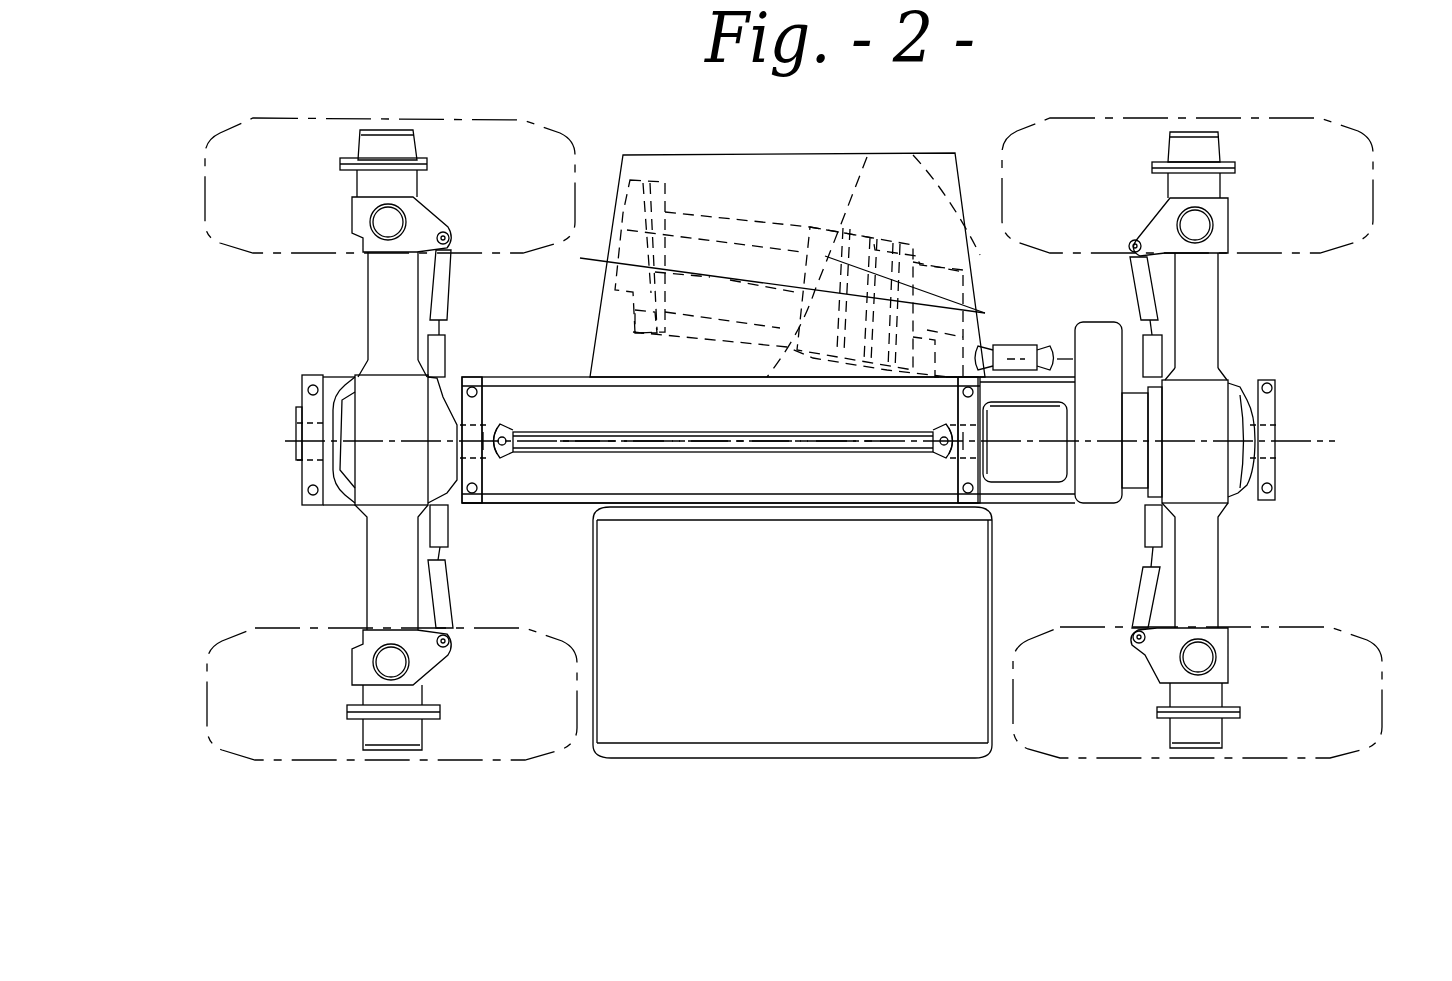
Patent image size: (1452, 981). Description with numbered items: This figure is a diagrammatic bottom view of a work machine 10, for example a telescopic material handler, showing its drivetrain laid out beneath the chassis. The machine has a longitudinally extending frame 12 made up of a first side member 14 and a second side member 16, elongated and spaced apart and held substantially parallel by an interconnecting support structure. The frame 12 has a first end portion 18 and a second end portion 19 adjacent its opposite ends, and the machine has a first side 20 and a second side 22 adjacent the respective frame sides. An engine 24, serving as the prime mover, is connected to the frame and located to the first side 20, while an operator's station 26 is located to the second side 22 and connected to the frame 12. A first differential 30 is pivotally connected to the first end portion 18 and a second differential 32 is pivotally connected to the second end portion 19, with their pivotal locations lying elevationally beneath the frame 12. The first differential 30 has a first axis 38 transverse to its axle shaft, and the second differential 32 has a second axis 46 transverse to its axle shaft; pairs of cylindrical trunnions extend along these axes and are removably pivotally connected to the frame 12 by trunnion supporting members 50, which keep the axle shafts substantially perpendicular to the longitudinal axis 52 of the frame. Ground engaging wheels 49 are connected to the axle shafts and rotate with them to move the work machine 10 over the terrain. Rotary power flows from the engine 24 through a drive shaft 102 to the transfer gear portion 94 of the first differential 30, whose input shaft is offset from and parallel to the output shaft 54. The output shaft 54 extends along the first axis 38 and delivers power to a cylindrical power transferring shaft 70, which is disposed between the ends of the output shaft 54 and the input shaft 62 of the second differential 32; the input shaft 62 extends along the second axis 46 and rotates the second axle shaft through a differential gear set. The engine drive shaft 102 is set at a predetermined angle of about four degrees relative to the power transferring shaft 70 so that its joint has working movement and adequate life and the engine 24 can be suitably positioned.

The work machine 10 is at (1306, 94).
The ground engaging wheels 49 is at (203, 190).
The engine 24 is at (742, 215).
The operator's station 26 is at (800, 626).
The first side 20 is at (571, 350).
The second side member 16 is at (488, 377).
The trunnion supporting members 50 is at (483, 390).
The frame 12 is at (335, 352).
The second differential 32 is at (377, 377).
The second axis 46 is at (325, 450).
The second end portion 19 is at (332, 372).
The first side member 14 is at (337, 507).
The longitudinal axis 52 is at (630, 432).
The power transferring shaft 70 is at (803, 455).
The input shaft 62 is at (505, 433).
The output shaft 54 is at (942, 455).
The drive shaft 102 is at (1030, 345).
The transfer gear portion 94 is at (1098, 323).
The first differential 30 is at (1213, 392).
The first axis 38 is at (1208, 438).
The first end portion 18 is at (1250, 503).
The second side 22 is at (568, 538).